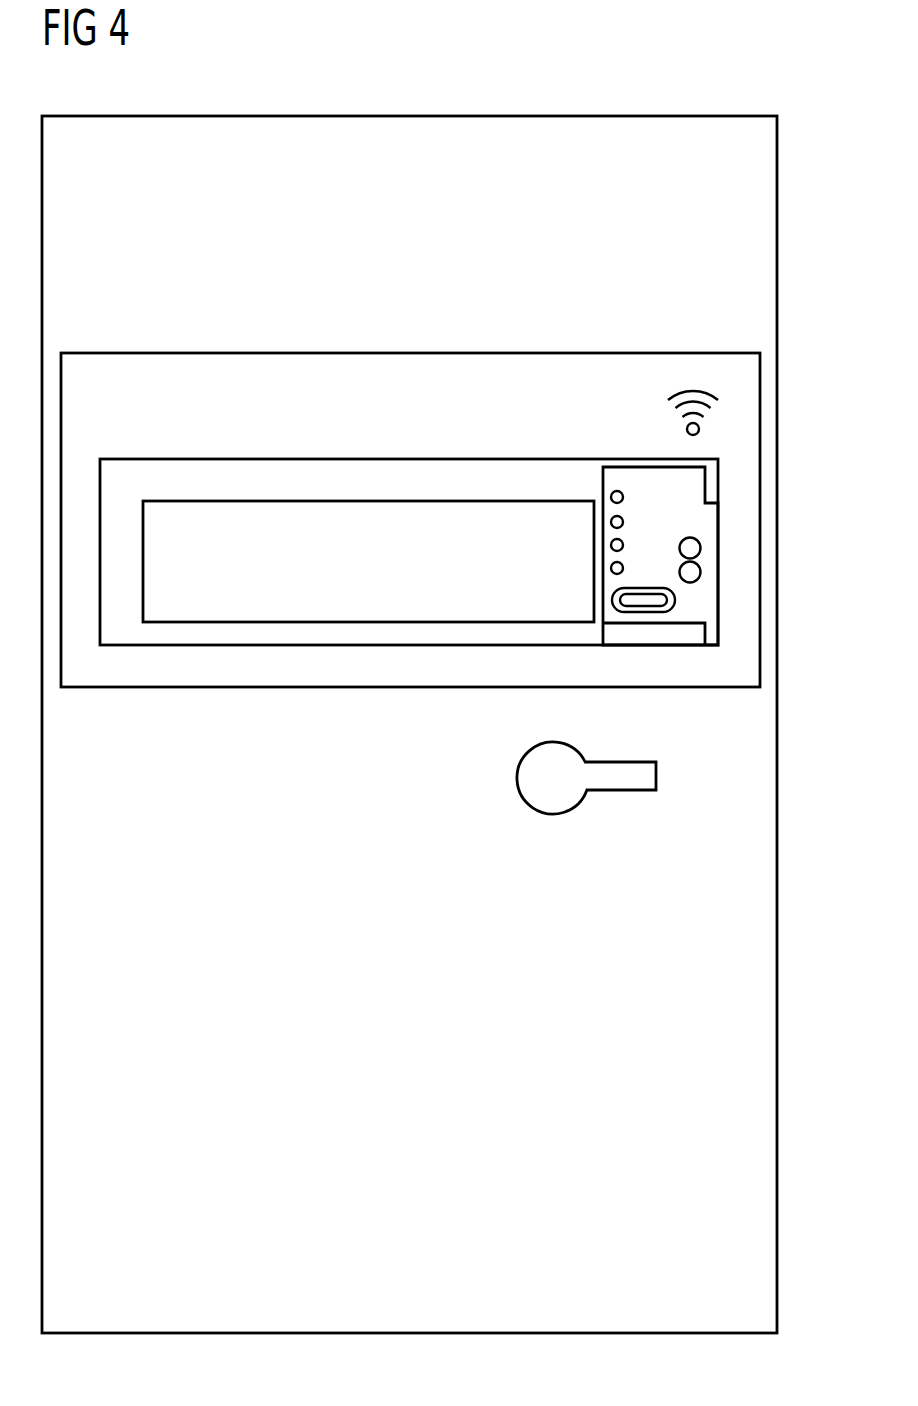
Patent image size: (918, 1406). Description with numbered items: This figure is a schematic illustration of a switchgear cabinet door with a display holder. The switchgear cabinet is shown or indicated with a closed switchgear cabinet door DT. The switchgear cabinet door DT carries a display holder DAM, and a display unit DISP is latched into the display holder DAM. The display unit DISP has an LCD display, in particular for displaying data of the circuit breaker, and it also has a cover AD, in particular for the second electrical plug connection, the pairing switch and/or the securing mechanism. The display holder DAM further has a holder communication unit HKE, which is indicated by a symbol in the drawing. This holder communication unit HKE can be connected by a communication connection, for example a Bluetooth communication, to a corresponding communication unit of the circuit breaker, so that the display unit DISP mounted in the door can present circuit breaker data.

The switchgear cabinet door DT is at (408, 115).
The display holder DAM is at (409, 352).
The display unit DISP is at (367, 472).
The holder communication unit HKE is at (686, 430).
The cover AD is at (720, 568).